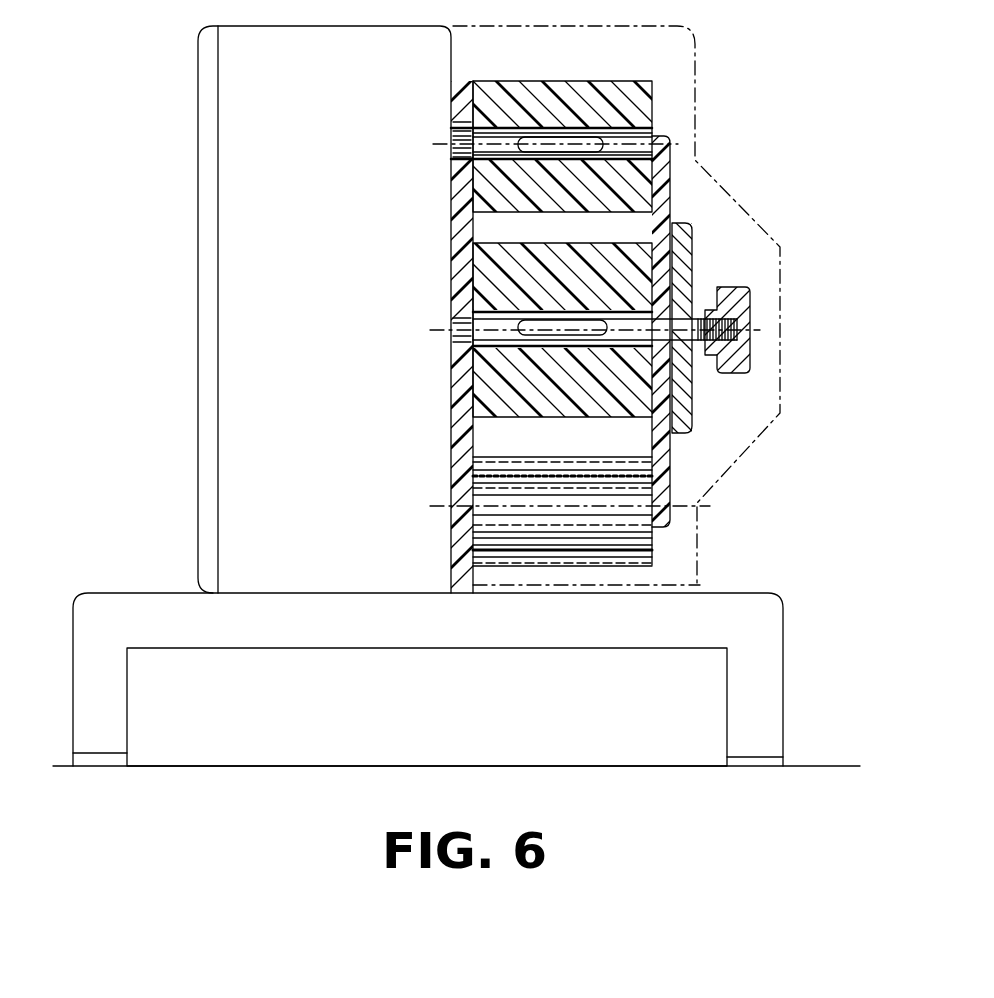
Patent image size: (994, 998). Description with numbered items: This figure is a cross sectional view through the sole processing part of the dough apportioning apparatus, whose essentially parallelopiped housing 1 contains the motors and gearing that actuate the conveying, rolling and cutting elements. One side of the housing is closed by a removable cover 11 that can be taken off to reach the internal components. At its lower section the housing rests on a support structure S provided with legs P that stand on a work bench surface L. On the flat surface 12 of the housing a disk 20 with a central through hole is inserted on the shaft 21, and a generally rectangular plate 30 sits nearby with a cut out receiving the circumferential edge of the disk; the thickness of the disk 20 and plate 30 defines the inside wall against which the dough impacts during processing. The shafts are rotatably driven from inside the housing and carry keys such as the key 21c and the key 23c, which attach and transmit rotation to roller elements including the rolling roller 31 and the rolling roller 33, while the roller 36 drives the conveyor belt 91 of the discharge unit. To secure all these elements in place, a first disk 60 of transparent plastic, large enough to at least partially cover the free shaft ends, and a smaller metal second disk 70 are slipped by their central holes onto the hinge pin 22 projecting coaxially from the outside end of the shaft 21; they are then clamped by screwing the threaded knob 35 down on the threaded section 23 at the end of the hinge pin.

The housing 1 is at (200, 420).
The removable cover 11 is at (203, 260).
The flat surface 12 is at (452, 80).
The disk 20 is at (460, 263).
The shaft 21 is at (496, 330).
The key 21c is at (462, 288).
The hinge pin 22 is at (663, 335).
The threaded section 23 is at (650, 133).
The key 23c is at (578, 138).
The rectangular plate 30 is at (460, 540).
The rolling roller 31 is at (632, 258).
The rolling roller 33 is at (622, 103).
The threaded knob 35 is at (747, 363).
The roller 36 is at (626, 537).
The first disk 60 is at (667, 480).
The second disk 70 is at (690, 263).
The conveyor belt 91 is at (618, 569).
The legs P is at (127, 705).
The support structure S is at (393, 650).
The work bench surface L is at (366, 766).